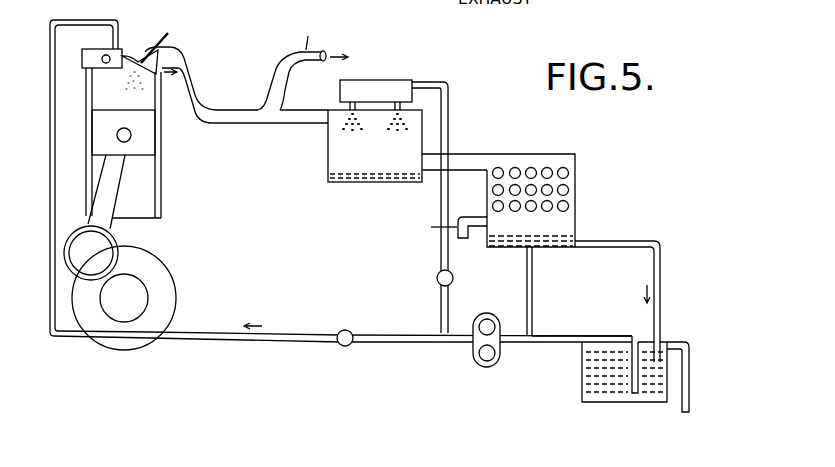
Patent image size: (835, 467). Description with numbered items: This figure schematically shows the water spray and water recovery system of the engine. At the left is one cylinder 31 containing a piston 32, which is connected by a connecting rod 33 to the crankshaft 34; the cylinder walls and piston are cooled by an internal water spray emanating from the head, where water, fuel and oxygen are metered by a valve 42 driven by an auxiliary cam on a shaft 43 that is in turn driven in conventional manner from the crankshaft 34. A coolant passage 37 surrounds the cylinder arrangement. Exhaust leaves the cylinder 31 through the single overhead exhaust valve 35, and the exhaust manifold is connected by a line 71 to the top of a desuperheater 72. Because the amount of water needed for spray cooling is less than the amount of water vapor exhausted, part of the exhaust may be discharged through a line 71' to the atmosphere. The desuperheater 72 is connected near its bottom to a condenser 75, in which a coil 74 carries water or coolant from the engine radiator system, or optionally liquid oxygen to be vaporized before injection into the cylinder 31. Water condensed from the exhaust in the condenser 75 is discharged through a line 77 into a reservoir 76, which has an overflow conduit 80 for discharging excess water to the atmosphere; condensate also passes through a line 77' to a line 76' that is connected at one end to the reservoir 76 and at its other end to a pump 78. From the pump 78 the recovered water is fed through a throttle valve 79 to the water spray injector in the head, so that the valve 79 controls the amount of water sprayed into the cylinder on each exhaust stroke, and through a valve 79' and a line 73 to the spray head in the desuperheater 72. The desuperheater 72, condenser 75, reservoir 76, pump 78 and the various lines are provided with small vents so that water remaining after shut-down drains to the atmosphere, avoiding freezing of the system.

The cylinder 31 is at (156, 100).
The piston 32 is at (160, 146).
The connecting rod 33 is at (113, 185).
The crankshaft 34 is at (147, 298).
The exhaust valve 35 is at (154, 41).
The coolant conduit 37 is at (52, 108).
The metering valve 42 is at (82, 60).
The shaft 43 is at (105, 56).
The line 71 is at (236, 101).
The line 71' is at (355, 63).
The desuperheater 72 is at (321, 171).
The line 73 is at (449, 112).
The coil 74 is at (569, 174).
The condenser 75 is at (567, 221).
The reservoir 76 is at (607, 369).
The line 76' is at (569, 364).
The line 77 is at (622, 290).
The line 77' is at (548, 291).
The pump 78 is at (487, 314).
The throttle valve 79 is at (345, 327).
The valve 79' is at (425, 277).
The overflow conduit 80 is at (678, 340).